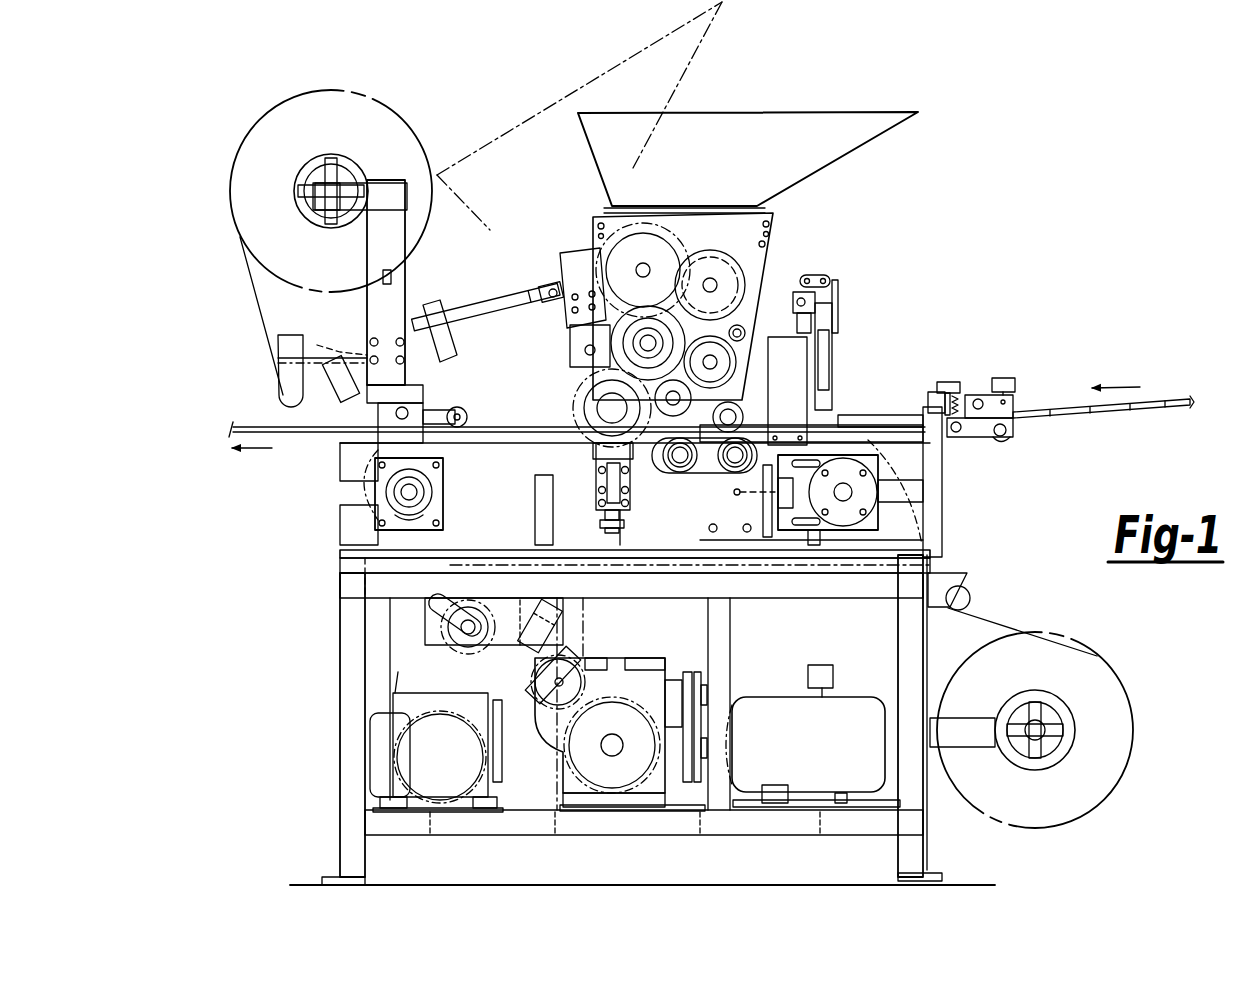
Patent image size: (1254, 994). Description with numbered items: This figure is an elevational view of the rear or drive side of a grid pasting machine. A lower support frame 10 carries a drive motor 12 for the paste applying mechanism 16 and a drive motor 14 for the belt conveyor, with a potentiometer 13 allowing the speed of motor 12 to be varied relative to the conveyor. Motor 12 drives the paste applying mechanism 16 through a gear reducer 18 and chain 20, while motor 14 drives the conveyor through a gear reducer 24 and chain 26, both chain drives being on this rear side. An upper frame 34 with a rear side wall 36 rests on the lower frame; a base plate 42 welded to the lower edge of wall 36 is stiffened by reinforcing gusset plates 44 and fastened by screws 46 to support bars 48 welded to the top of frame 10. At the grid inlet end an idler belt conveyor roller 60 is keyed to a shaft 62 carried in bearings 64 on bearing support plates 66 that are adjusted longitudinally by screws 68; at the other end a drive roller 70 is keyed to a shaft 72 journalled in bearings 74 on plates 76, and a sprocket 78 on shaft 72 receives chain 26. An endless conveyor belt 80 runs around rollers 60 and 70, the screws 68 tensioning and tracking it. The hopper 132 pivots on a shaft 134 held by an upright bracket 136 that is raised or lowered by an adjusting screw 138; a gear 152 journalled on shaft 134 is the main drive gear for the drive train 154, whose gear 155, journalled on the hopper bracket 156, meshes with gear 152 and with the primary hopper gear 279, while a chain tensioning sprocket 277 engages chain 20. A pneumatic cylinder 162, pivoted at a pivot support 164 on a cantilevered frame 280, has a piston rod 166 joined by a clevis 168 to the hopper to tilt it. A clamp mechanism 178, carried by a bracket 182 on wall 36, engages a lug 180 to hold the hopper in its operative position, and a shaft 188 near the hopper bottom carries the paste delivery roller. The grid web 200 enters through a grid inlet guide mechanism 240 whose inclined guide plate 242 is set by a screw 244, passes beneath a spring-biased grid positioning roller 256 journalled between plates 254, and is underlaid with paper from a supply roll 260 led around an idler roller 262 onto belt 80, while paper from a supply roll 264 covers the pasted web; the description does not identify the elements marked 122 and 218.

The lower support frame 10 is at (332, 672).
The drive motor 12 is at (855, 700).
The potentiometer 13 is at (821, 665).
The drive motor 14 is at (377, 745).
The paste applying mechanism 16 is at (584, 200).
The gear reducer 18 is at (690, 665).
The chain 20 is at (655, 623).
The gear reducer 24 is at (452, 715).
The chain 26 is at (399, 672).
The upper frame 34 is at (335, 455).
The rear side wall 36 is at (345, 510).
The base plate 42 is at (340, 558).
The reinforcing gusset plates 44 is at (505, 567).
The screws 46 is at (432, 567).
The support bars 48 is at (340, 582).
The belt conveyor roller 60 is at (872, 425).
The shaft 62 is at (851, 492).
The bearings 64 is at (860, 463).
The bearing support plates 66 is at (812, 580).
The adjusting screws 68 is at (737, 495).
The conveyor belt drive roller 70 is at (430, 440).
The shaft 72 is at (425, 492).
The bearings 74 is at (441, 470).
The plates 76 is at (445, 518).
The sprocket 78 is at (401, 490).
The endless conveyor belt 80 is at (778, 420).
The shaft 122 is at (620, 545).
The hopper 132 is at (776, 226).
The shaft 134 is at (600, 432).
The upright bracket 136 is at (600, 450).
The adjusting screw 138 is at (590, 546).
The gear 152 is at (598, 410).
The drive train 154 is at (700, 245).
The gear 155 is at (568, 360).
The bracket 156 is at (549, 256).
The pneumatic cylinder 162 is at (420, 318).
The pivot support 164 is at (370, 352).
The piston rod 166 is at (491, 322).
The clevis 168 is at (541, 300).
The clamp mechanism 178 is at (841, 303).
The lug 180 is at (752, 278).
The bracket 182 is at (812, 350).
The shaft 188 is at (754, 390).
The grid web 200 is at (1145, 412).
The pivot block 218 is at (802, 370).
The grid inlet guide mechanism 240 is at (982, 378).
The guide plate 242 is at (882, 415).
The screw 244 is at (962, 382).
The plates 254 is at (792, 395).
The grid positioning roller 256 is at (660, 530).
The supply roll 260 is at (1106, 674).
The idler roller 262 is at (962, 602).
The supply roll 264 is at (352, 58).
The chain tensioning sprocket 277 is at (586, 682).
The gear 279 is at (703, 240).
The frame 280 is at (408, 268).